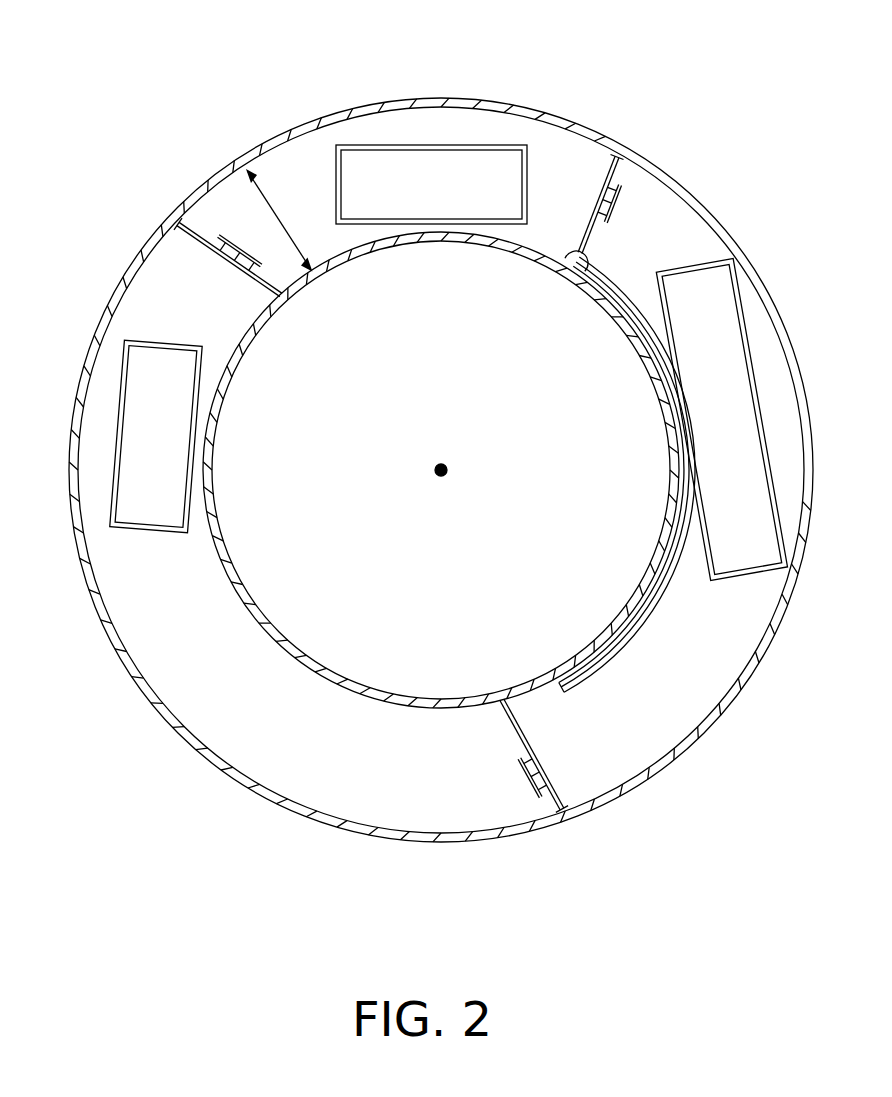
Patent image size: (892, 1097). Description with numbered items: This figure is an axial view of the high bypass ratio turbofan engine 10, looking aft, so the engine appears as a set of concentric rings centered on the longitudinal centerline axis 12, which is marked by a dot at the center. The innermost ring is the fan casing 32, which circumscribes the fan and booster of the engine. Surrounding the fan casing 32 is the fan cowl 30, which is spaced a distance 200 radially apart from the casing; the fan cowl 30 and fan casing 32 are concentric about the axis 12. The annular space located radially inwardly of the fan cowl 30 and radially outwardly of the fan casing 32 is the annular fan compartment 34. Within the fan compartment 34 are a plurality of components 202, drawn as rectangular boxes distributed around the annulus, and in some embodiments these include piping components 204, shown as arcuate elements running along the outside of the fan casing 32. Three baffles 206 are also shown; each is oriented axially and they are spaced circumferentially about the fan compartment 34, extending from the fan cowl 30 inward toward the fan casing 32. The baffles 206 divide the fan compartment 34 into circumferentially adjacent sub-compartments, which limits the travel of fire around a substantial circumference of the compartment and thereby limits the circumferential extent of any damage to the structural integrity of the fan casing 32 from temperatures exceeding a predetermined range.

The high bypass ratio turbofan engine 10 is at (258, 72).
The longitudinal centerline axis 12 is at (440, 465).
The fan cowl 30 is at (667, 178).
The fan casing 32 is at (648, 600).
The annular fan compartment 34 is at (633, 728).
The distance 200 is at (280, 212).
The components 202 is at (448, 189).
The piping components 204 is at (668, 572).
The baffles 206 is at (184, 248).